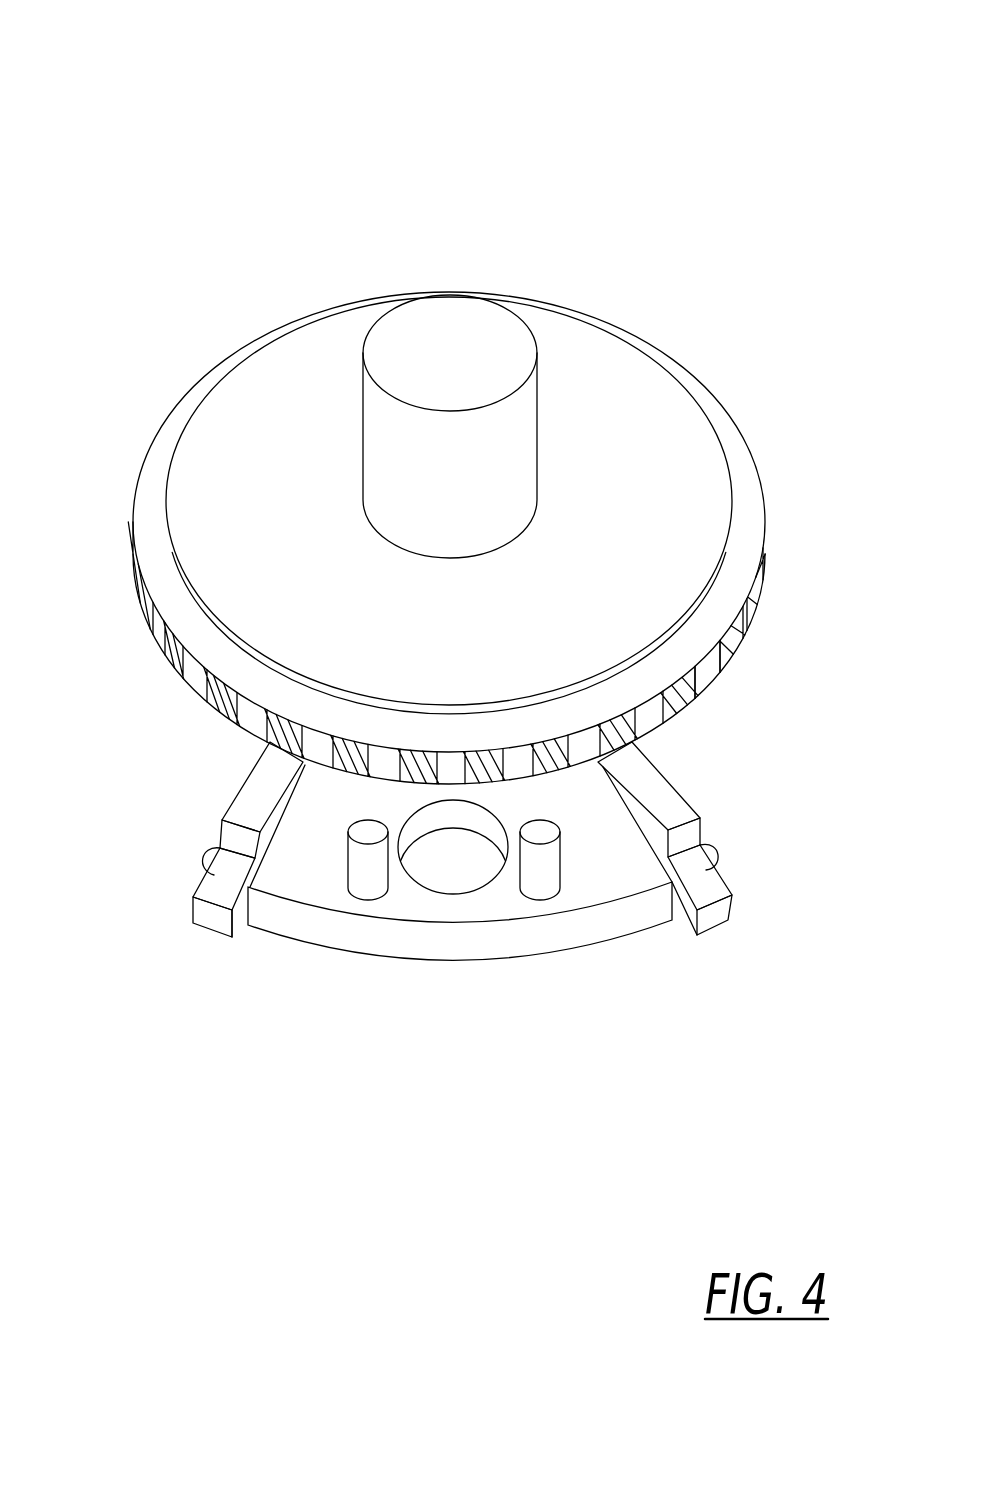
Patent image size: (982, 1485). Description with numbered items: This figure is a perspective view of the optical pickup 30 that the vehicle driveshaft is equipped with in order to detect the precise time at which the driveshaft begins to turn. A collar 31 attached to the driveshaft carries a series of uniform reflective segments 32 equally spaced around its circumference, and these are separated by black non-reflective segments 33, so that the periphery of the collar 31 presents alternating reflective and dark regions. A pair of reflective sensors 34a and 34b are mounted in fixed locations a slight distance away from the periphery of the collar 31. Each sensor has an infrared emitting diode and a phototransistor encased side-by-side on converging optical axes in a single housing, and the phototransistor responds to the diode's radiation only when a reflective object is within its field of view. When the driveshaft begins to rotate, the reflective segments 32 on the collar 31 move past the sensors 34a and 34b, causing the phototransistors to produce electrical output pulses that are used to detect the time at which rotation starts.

The optical pickup 30 is at (739, 94).
The collar 31 is at (152, 503).
The reflective segments 32 is at (195, 690).
The non-reflective segments 33 is at (728, 660).
The reflective sensor 34a is at (230, 830).
The reflective sensor 34b is at (700, 830).